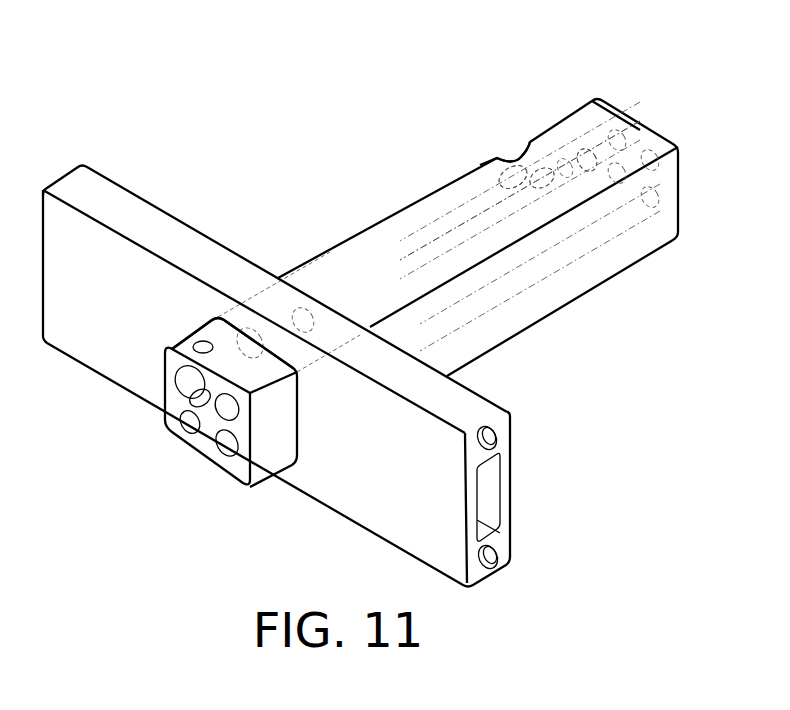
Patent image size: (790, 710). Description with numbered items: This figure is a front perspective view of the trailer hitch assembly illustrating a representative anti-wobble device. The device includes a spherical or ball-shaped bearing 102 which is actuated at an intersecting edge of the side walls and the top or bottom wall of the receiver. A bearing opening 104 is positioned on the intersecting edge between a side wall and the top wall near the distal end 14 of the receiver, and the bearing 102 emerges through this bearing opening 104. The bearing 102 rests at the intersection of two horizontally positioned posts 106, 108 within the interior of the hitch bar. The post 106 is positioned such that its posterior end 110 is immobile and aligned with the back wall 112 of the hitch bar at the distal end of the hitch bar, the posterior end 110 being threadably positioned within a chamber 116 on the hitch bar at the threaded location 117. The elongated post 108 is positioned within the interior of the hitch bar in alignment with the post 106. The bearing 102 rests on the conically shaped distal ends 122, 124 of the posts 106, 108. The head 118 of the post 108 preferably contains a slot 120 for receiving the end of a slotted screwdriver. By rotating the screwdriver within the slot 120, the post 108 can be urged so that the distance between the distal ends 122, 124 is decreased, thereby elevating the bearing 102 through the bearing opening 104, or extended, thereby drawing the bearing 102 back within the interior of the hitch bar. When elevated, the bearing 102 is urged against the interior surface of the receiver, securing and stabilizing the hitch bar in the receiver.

The distal end 14 is at (677, 147).
The bearing 102 is at (507, 152).
The bearing opening 104 is at (490, 158).
The post 106 is at (565, 160).
The elongated post 108 is at (382, 268).
The posterior end 110 is at (597, 163).
The back wall 112 is at (615, 117).
The chamber 116 is at (117, 367).
The threaded location 117 is at (207, 332).
The head 118 is at (232, 467).
The slot 120 is at (190, 382).
The conically shaped distal end 122 is at (547, 177).
The conically shaped distal end 124 is at (488, 162).